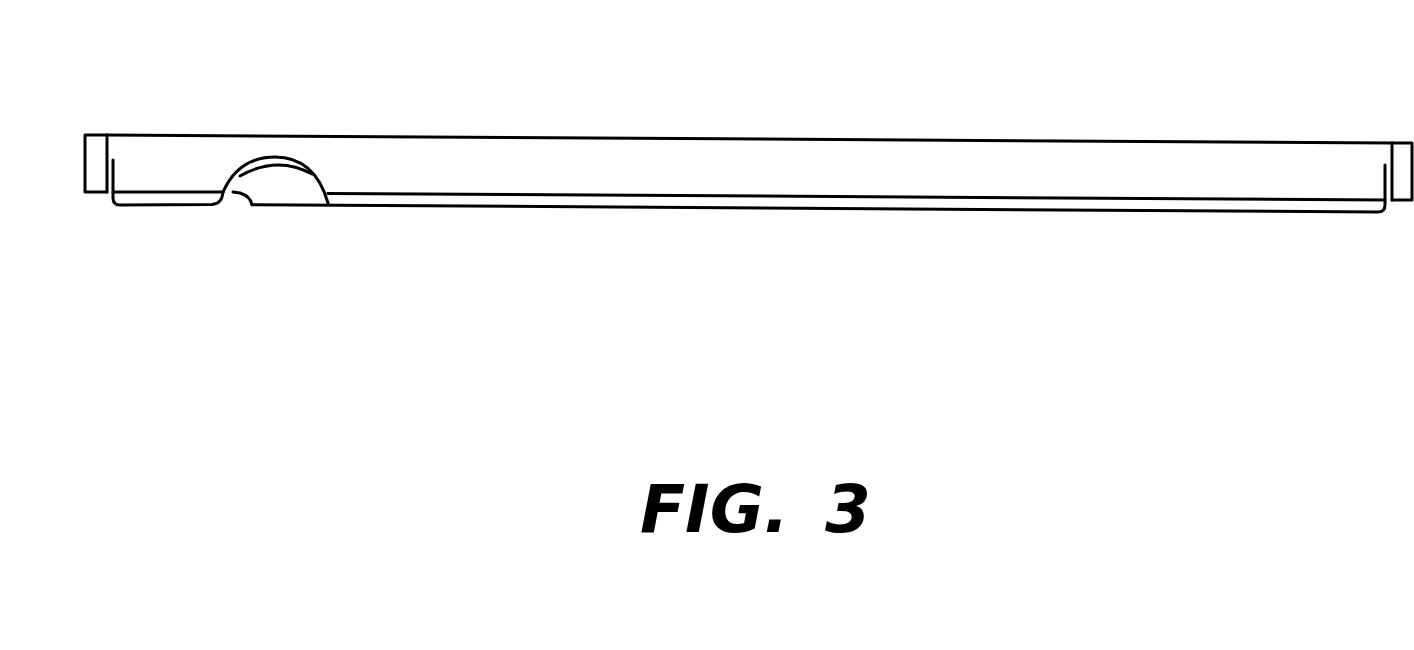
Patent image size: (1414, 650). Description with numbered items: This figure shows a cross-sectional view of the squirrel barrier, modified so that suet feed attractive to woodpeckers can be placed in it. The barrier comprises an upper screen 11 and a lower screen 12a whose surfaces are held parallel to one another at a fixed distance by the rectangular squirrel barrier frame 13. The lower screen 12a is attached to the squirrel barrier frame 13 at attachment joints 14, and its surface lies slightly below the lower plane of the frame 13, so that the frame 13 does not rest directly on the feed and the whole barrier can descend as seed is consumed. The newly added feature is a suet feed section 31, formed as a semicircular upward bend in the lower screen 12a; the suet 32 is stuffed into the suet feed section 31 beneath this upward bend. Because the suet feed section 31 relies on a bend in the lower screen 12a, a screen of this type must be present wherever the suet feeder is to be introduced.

The upper screen 11 is at (1130, 140).
The lower screen 12a is at (480, 208).
The squirrel barrier frame 13 is at (993, 167).
The attachment joints 14 is at (109, 163).
The suet feed section 31 is at (293, 157).
The suet 32 is at (268, 193).